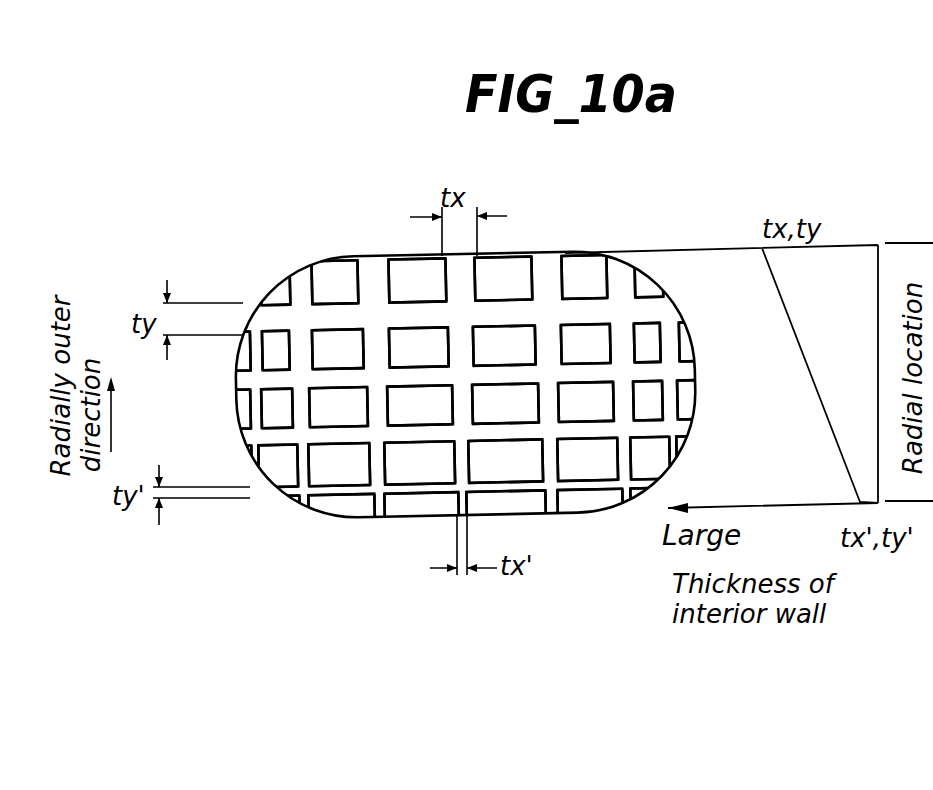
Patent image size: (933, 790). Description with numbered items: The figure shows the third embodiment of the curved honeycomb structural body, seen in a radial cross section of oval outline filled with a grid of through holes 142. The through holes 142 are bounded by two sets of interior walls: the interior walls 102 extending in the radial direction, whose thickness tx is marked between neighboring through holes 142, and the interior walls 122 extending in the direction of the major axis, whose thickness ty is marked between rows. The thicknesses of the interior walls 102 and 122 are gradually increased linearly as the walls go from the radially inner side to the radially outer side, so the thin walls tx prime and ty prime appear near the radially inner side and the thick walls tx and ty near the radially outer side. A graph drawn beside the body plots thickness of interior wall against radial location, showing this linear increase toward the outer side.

The interior wall 102 is at (463, 348).
The interior wall 122 is at (342, 376).
The through hole 142 is at (418, 347).